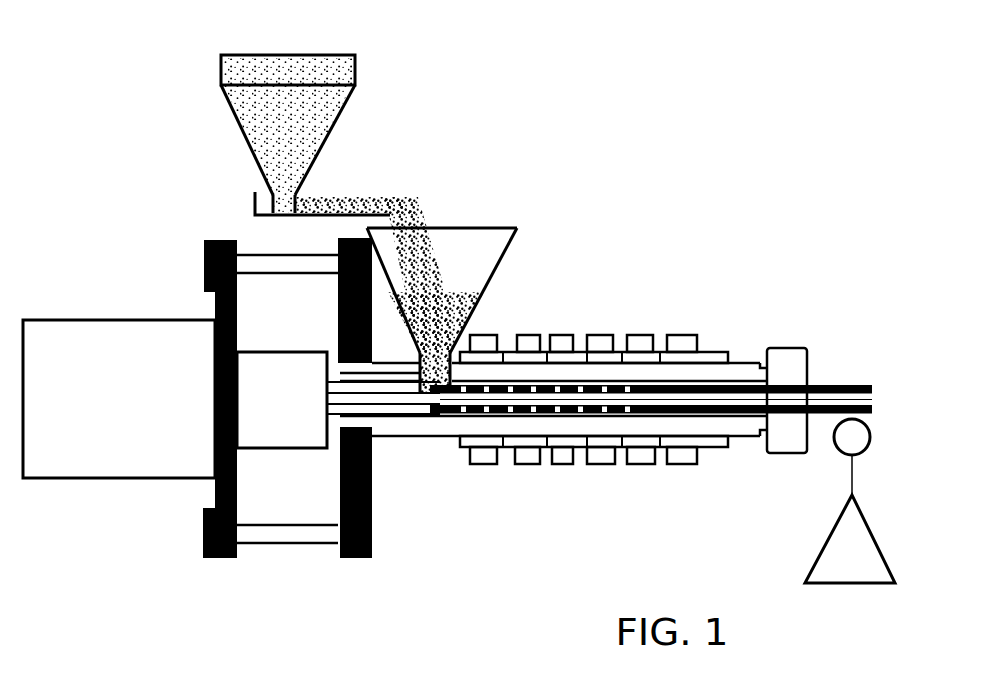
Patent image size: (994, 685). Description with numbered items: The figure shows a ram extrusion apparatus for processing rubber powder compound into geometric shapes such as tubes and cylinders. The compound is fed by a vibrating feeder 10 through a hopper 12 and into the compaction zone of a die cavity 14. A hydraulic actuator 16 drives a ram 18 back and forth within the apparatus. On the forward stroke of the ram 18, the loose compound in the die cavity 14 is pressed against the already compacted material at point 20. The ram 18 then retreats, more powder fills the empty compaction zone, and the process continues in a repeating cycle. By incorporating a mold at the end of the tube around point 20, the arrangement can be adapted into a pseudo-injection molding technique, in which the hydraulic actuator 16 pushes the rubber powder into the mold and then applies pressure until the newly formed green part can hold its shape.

The vibrating feeder 10 is at (240, 72).
The hopper 12 is at (484, 233).
The die cavity 14 is at (456, 416).
The hydraulic actuator 16 is at (280, 433).
The ram 18 is at (400, 416).
The point 20 is at (543, 436).